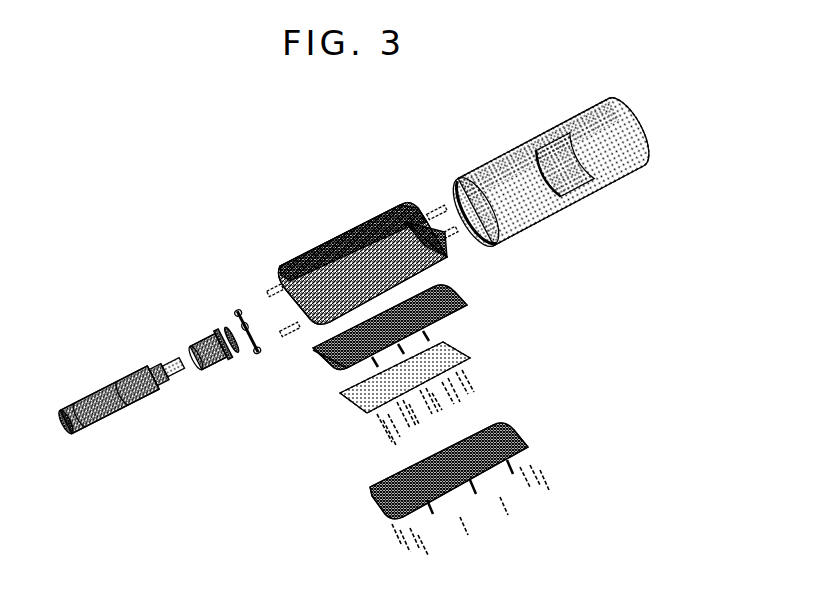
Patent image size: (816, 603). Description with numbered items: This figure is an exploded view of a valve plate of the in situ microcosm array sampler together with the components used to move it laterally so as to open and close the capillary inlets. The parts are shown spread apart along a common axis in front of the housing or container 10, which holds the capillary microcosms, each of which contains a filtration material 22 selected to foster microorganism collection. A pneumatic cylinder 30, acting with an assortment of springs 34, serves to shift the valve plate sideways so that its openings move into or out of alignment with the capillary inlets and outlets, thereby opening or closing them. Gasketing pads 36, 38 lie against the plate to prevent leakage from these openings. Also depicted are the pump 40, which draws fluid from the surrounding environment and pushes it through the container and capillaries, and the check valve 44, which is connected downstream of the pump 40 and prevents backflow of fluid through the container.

The housing or container 10 is at (325, 245).
The filtration material 22 is at (347, 373).
The pneumatic cylinder 30 is at (203, 335).
The springs 34 is at (477, 392).
The gasketing pad 36 is at (467, 308).
The gasketing pad 38 is at (387, 208).
The pump 40 is at (117, 410).
The check valve 44 is at (607, 187).